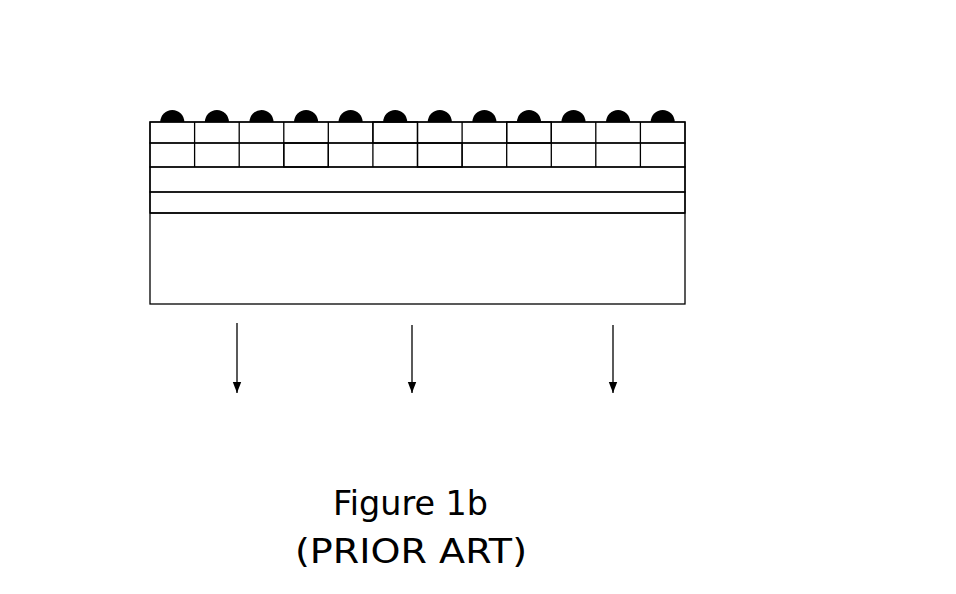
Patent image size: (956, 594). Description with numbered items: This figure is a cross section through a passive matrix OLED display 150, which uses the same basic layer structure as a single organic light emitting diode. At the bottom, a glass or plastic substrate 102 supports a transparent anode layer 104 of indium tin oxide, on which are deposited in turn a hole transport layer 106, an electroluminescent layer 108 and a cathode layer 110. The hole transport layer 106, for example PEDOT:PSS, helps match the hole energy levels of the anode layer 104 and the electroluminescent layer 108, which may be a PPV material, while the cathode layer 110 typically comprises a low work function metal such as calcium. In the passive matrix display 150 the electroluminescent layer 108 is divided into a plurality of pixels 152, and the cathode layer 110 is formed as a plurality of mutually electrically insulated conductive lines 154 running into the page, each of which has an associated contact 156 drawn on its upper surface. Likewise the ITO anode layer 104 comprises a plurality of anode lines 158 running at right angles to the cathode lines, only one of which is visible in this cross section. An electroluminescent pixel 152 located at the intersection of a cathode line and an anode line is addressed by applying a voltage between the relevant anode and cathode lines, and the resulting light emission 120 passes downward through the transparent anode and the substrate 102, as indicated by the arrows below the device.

The substrate 102 is at (685, 267).
The anode layer 104 is at (687, 198).
The hole transport layer 106 is at (687, 177).
The electroluminescent layer 108 is at (142, 156).
The cathode layer 110 is at (142, 130).
The light emission 120 is at (615, 365).
The passive matrix OLED display 150 is at (140, 347).
The pixels 152 is at (300, 158).
The conductive lines 154 is at (393, 130).
The contact 156 is at (212, 112).
The anode lines 158 is at (657, 177).